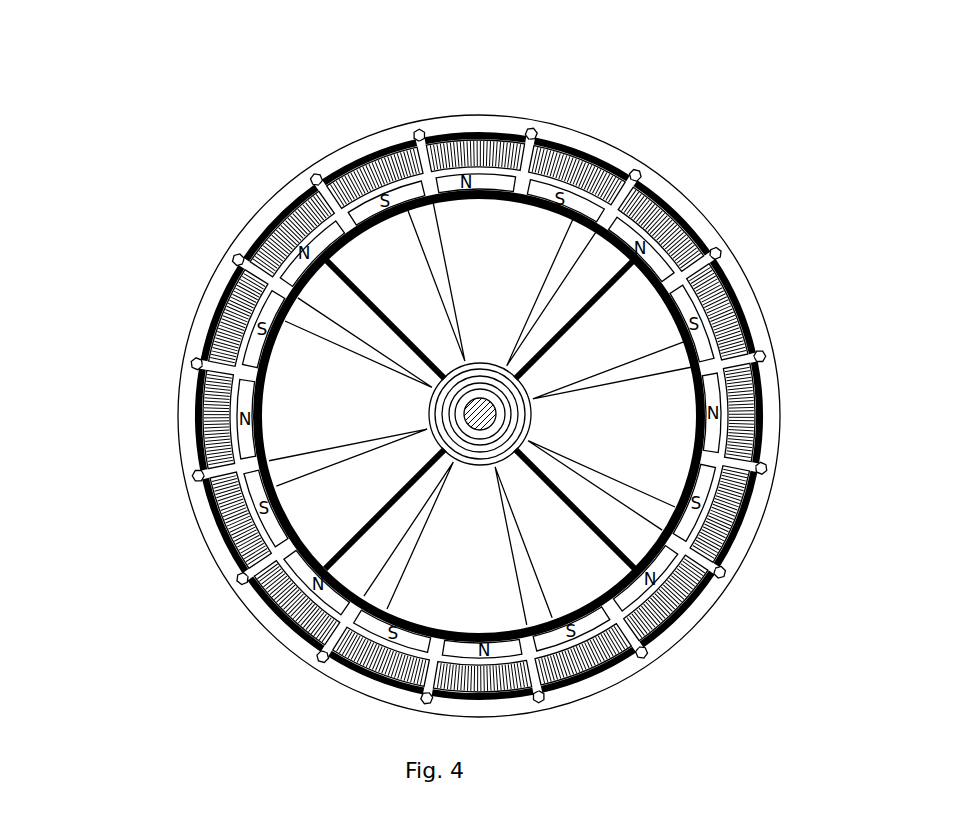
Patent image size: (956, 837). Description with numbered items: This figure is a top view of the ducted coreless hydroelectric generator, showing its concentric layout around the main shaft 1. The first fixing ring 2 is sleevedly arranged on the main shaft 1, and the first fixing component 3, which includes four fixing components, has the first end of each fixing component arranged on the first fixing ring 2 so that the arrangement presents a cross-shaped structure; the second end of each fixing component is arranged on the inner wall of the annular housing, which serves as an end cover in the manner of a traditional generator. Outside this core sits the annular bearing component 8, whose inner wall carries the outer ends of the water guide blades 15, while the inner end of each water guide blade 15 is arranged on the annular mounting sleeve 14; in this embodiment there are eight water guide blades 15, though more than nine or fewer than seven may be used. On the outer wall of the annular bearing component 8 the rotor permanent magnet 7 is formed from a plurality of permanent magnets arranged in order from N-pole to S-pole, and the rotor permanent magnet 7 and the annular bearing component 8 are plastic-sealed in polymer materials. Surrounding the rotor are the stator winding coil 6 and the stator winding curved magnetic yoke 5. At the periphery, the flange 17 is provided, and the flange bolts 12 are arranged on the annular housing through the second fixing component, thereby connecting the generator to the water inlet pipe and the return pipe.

The flange 17 is at (192, 313).
The flange bolt 12 is at (228, 258).
The stator winding curved magnetic yoke 5 is at (266, 228).
The stator winding coil 6 is at (332, 195).
The rotor permanent magnet 7 is at (401, 215).
The annular bearing component 8 is at (457, 222).
The water guide blade 15 is at (461, 230).
The annular mounting sleeve 14 is at (463, 357).
The main shaft 1 is at (505, 400).
The first fixing ring 2 is at (521, 371).
The first fixing component 3 is at (551, 483).